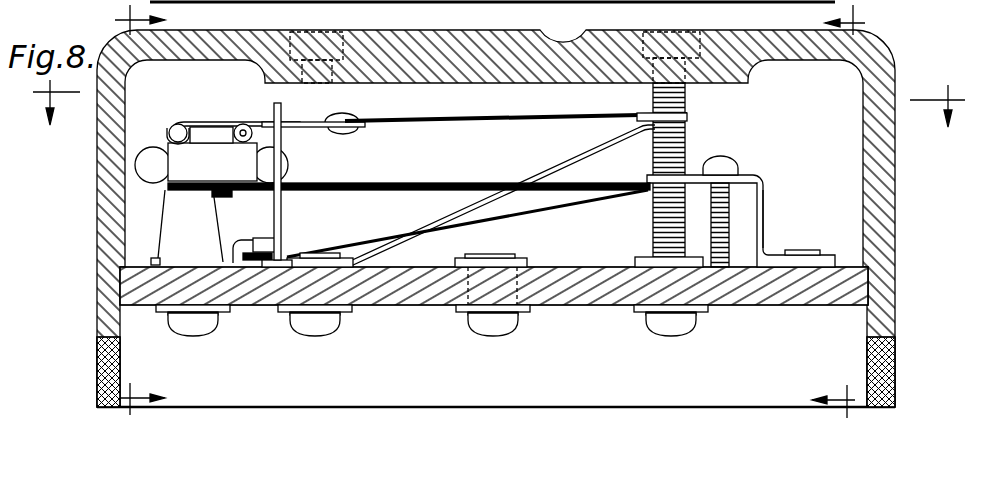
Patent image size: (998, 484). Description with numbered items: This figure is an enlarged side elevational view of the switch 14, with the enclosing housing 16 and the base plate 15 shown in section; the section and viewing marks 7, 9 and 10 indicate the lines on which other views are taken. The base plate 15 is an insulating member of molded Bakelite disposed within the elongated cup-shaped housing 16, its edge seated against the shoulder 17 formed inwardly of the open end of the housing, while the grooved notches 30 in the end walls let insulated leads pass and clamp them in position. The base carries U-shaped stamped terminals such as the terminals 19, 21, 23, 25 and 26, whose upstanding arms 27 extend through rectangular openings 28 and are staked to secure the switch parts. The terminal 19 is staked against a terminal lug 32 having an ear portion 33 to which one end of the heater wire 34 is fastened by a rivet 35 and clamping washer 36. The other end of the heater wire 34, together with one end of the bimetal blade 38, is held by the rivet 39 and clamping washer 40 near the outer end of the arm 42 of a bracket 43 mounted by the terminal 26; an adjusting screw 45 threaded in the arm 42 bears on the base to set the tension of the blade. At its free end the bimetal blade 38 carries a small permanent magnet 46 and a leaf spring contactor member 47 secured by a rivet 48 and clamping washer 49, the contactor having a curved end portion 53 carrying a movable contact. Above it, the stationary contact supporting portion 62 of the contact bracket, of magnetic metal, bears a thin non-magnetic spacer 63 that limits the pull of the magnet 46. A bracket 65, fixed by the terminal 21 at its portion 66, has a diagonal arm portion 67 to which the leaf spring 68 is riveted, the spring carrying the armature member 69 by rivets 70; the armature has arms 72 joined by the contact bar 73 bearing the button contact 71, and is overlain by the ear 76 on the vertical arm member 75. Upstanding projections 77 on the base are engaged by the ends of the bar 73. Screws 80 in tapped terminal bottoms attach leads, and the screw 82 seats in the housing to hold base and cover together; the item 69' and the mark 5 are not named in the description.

The armature bar 5 is at (258, 170).
The section line 7- 7 is at (495, 103).
The section line 9- 9 is at (140, 214).
The section line 10- 10 is at (847, 215).
The switch 14 is at (957, 166).
The base plate 15 is at (575, 303).
The housing 16 is at (465, 30).
The shoulder 17 is at (872, 270).
The terminal 19 is at (167, 310).
The terminal 21 is at (348, 312).
The terminal 23 is at (460, 313).
The terminal 25 is at (647, 317).
The terminal 26 is at (777, 312).
The upstanding arm 27 is at (339, 252).
The rectangular opening 28 is at (537, 267).
The grooved notch 30 is at (97, 375).
The terminal lug 32 is at (232, 258).
The ear portion 33 is at (250, 250).
The heater wire 34 is at (378, 238).
The rivet 35 is at (272, 238).
The clamping washer 36 is at (263, 264).
The bimetal blade 38 is at (478, 183).
The rivet 39 is at (688, 148).
The clamping washer 40 is at (648, 193).
The arm 42 is at (732, 176).
The bracket 43 is at (768, 218).
The adjusting screw 45 is at (730, 158).
The permanent magnet 46 is at (248, 162).
The leaf spring contactor member 47 is at (162, 187).
The rivet 48 is at (213, 198).
The clamping washer 49 is at (230, 197).
The curved end portion 53 is at (152, 148).
The stationary contact supporting portion 62 is at (246, 124).
The non-magnetic spacer 63 is at (230, 130).
The bracket 65 is at (432, 218).
The portion 66 is at (355, 266).
The arm portion 67 is at (550, 163).
The leaf spring 68 is at (503, 117).
The armature member 69 is at (313, 106).
The nut 69' is at (653, 138).
The rivet 70 is at (345, 115).
The button contact 71 is at (167, 128).
The arm 72 is at (208, 121).
The contact bar 73 is at (183, 125).
The arm member 75 is at (283, 200).
The ear 76 is at (281, 116).
The upstanding projection 77 is at (168, 240).
The screw 80 is at (195, 337).
The screw 82 is at (653, 97).